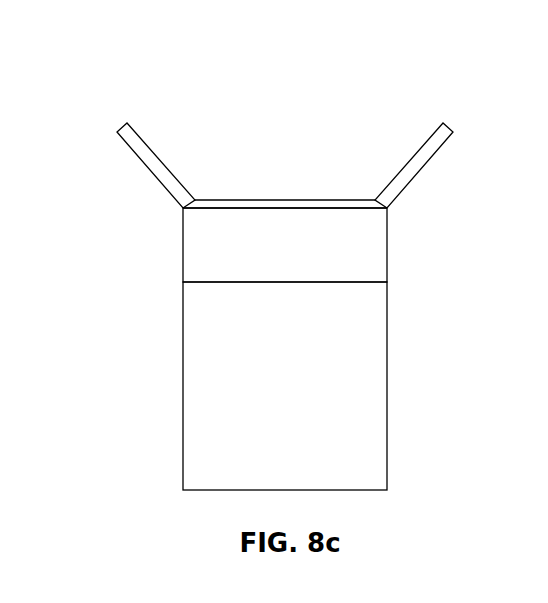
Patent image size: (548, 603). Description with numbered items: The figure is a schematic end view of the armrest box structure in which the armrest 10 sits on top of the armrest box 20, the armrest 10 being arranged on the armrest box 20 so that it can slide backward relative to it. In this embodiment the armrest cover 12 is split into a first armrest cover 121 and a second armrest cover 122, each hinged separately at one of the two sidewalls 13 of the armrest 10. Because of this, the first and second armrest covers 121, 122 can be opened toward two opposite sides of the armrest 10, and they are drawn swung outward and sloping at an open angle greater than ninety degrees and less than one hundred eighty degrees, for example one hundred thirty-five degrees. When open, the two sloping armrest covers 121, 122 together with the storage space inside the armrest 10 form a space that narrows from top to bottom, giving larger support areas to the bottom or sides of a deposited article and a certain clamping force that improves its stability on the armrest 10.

The armrest 10 is at (218, 252).
The armrest cover 12 is at (285, 112).
The first armrest cover 121 is at (177, 182).
The second armrest cover 122 is at (387, 139).
The sidewall 13 is at (388, 250).
The armrest box 20 is at (358, 365).